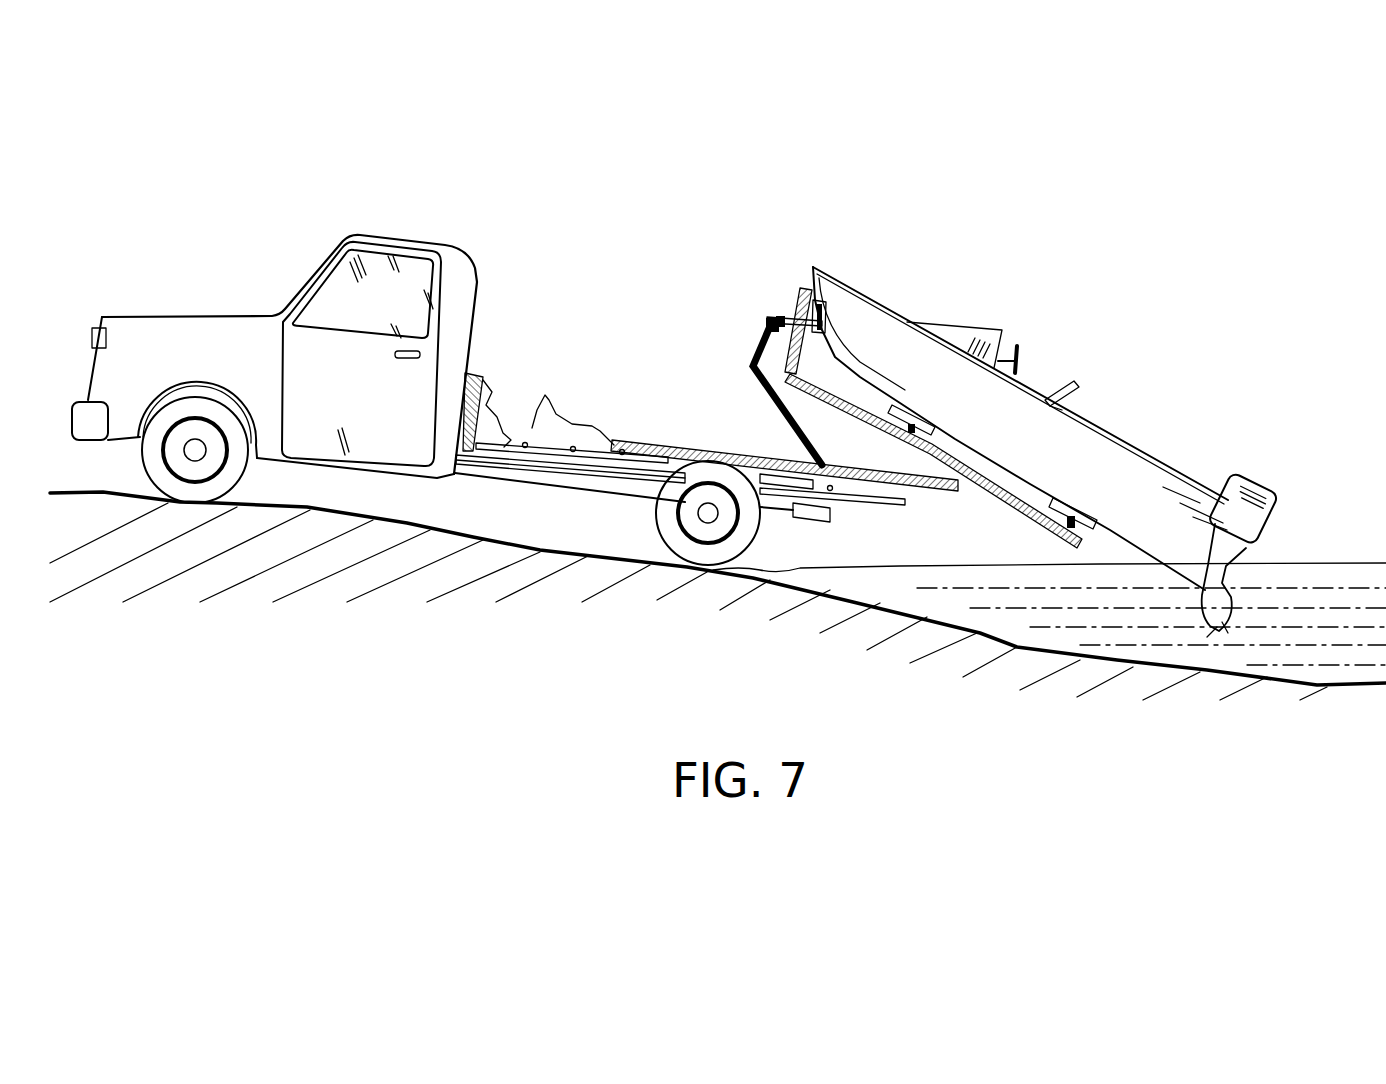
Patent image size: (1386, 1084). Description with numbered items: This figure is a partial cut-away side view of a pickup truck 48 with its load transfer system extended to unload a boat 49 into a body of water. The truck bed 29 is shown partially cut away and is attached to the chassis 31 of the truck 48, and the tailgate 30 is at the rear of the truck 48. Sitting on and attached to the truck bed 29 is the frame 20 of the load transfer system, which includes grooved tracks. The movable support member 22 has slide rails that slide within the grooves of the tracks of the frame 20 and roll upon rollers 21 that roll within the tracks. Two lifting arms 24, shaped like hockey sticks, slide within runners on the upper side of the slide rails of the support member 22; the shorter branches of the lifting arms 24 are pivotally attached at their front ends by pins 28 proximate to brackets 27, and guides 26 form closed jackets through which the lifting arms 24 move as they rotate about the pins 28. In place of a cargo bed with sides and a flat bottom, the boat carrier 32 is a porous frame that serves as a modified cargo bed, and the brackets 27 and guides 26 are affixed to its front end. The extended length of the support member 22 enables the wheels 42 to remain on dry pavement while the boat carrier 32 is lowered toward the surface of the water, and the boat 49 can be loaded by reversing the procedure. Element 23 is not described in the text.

The frame 20 is at (548, 470).
The rollers 21 is at (612, 445).
The movable support member 22 is at (648, 441).
The tilt frame 23 is at (835, 470).
The lifting arms 24 is at (768, 390).
The guides 26 is at (762, 333).
The brackets 27 is at (790, 300).
The pins 28 is at (774, 319).
The truck bed 29 is at (490, 448).
The tailgate 30 is at (880, 505).
The chassis 31 is at (612, 485).
The boat carrier 32 is at (986, 490).
The wheels 42 is at (727, 520).
The pickup truck 48 is at (462, 278).
The boat 49 is at (1090, 441).